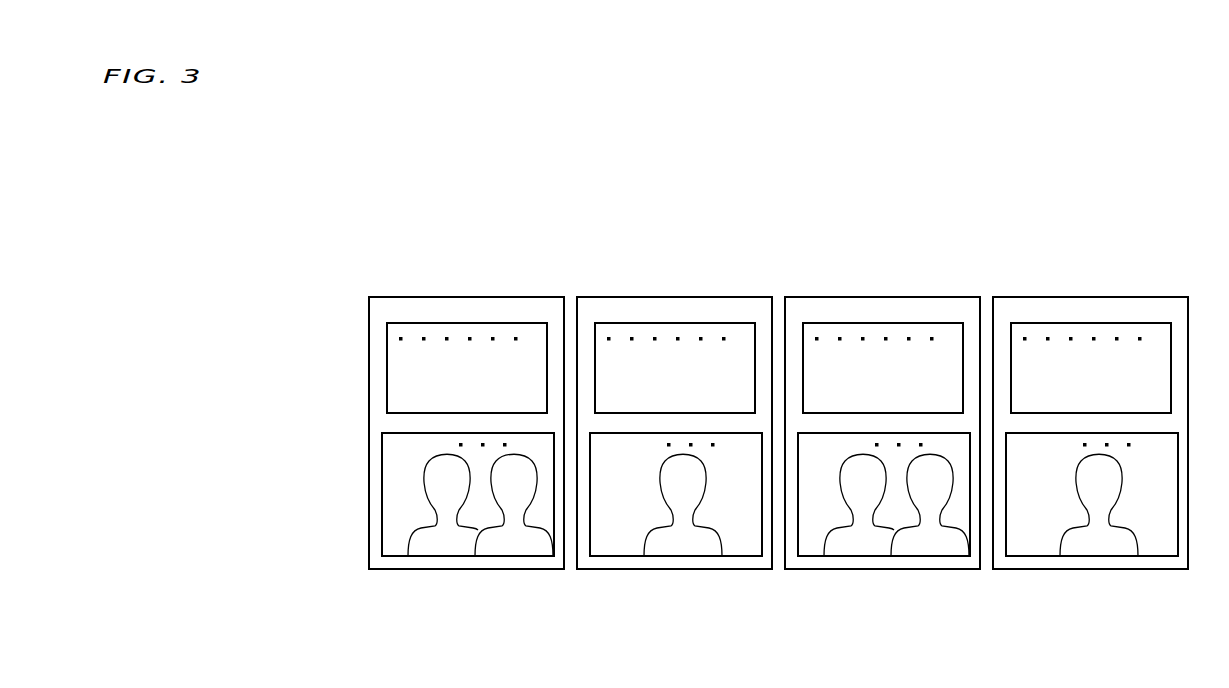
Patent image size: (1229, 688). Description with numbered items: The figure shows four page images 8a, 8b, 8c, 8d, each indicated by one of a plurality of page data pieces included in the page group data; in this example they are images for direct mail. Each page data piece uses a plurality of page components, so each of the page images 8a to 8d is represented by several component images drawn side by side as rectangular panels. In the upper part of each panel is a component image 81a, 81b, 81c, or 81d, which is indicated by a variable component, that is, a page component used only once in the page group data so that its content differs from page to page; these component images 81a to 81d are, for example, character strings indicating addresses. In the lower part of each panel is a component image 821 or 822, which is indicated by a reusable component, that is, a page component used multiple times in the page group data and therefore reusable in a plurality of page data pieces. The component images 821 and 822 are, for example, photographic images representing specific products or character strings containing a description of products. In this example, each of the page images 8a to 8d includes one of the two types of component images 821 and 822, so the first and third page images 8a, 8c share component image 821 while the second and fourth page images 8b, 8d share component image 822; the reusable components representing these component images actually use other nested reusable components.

The page image 8a is at (467, 297).
The page image 8b is at (675, 297).
The page image 8c is at (882, 398).
The page image 8d is at (1090, 398).
The component image 81a is at (493, 323).
The component image 81b is at (701, 323).
The component image 81c is at (883, 333).
The component image 81d is at (1091, 333).
The component image 821 is at (467, 556).
The component image 822 is at (675, 556).